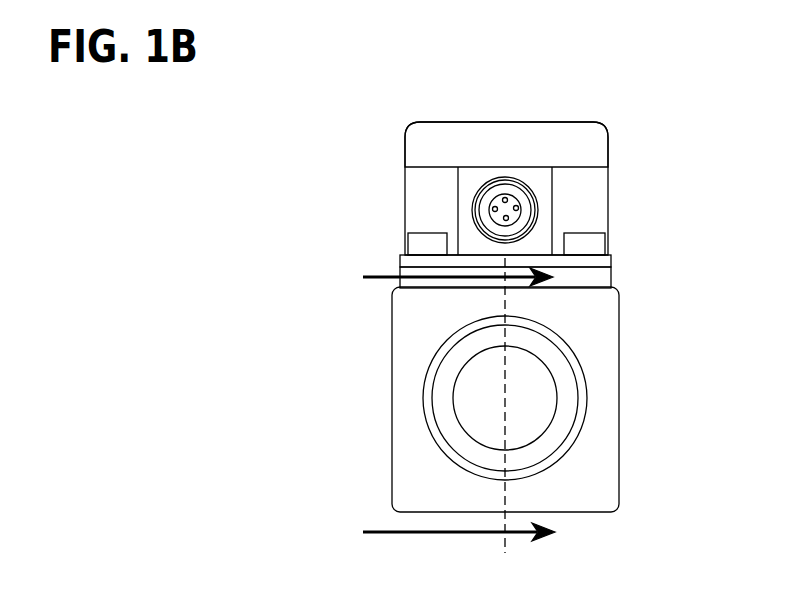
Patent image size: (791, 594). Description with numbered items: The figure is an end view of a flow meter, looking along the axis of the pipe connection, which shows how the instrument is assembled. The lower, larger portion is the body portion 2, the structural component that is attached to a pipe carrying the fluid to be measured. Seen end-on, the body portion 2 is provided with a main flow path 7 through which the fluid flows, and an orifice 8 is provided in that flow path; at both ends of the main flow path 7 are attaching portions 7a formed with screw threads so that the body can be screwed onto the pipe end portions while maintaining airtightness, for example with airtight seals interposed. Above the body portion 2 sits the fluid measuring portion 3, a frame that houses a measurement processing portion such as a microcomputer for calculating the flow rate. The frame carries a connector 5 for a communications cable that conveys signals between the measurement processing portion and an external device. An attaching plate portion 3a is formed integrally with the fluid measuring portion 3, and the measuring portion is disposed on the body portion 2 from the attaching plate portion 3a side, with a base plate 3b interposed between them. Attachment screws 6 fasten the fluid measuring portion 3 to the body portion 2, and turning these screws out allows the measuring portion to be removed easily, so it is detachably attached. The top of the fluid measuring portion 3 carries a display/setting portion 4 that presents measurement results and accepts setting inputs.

The body portion 2 is at (619, 448).
The fluid measuring portion 3 is at (608, 195).
The attaching plate portion 3a is at (611, 258).
The base plate 3b is at (611, 278).
The display/setting portion 4 is at (559, 122).
The connector 5 is at (473, 208).
The attachment screws 6 is at (410, 246).
The main flow path 7 is at (438, 427).
The attaching portions 7a is at (450, 453).
The orifice 8 is at (455, 390).